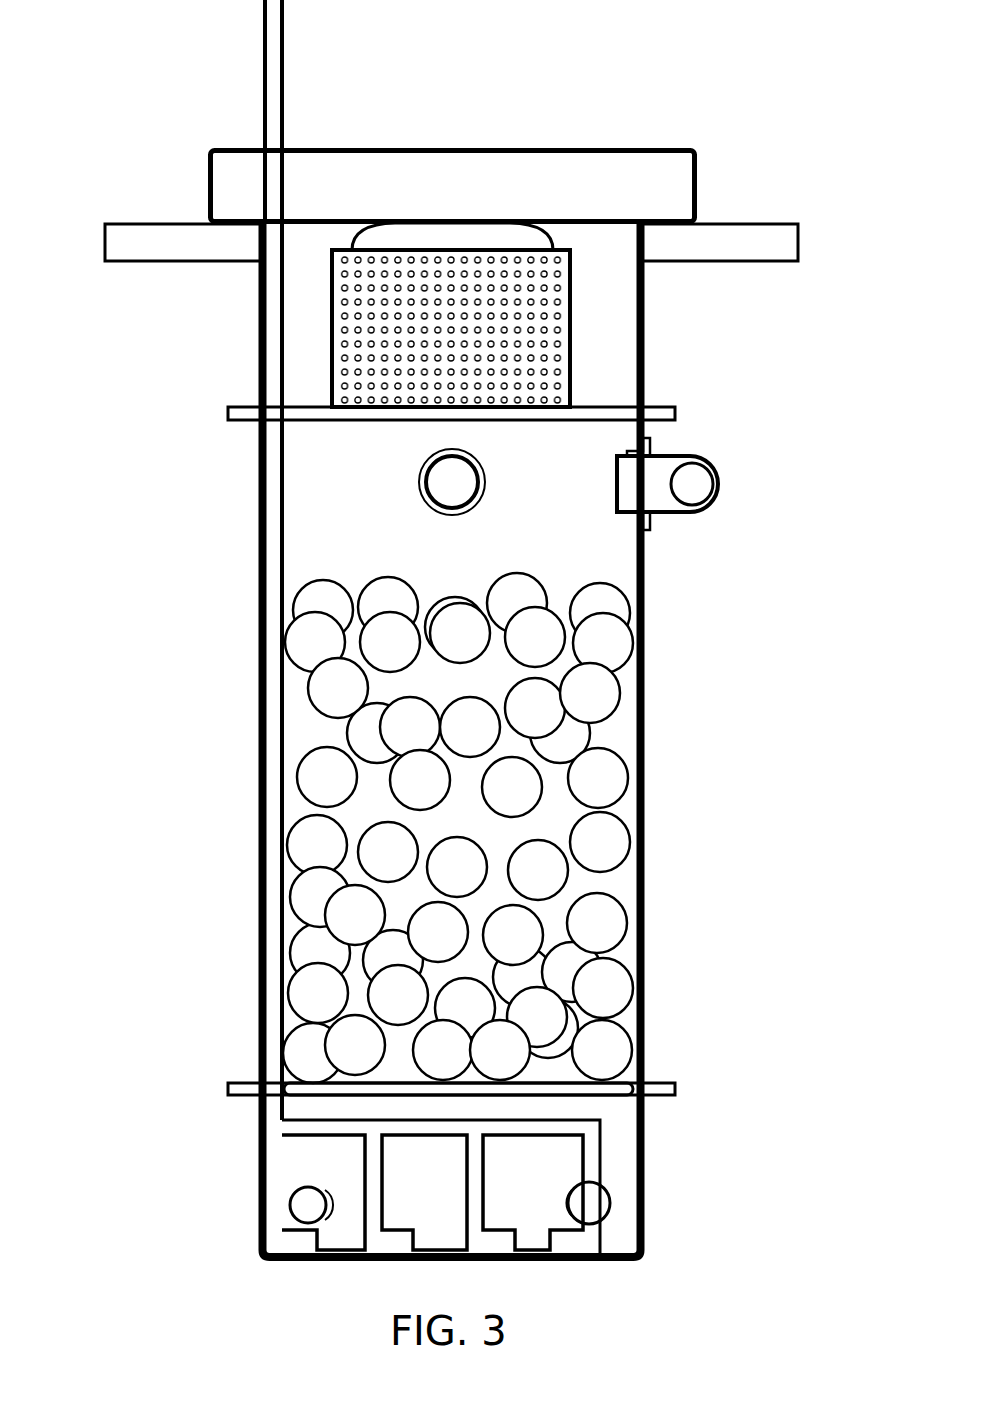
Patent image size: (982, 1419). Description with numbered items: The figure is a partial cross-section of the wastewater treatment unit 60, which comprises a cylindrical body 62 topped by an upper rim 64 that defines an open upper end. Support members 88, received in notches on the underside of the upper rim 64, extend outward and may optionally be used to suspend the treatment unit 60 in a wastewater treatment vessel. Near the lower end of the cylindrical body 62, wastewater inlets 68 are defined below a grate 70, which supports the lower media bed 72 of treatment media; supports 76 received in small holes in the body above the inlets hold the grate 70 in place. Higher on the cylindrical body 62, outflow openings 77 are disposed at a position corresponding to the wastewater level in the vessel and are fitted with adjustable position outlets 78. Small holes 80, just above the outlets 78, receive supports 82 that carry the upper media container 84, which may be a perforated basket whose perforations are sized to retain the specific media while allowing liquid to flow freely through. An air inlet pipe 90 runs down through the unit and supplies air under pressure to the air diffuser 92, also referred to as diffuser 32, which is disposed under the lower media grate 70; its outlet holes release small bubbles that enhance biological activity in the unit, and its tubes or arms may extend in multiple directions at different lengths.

The air diffuser 32 is at (415, 739).
The wastewater treatment unit 60 is at (460, 739).
The cylindrical body 62 is at (258, 692).
The upper rim 64 is at (698, 165).
The wastewater inlets 68 is at (288, 1198).
The grate 70 is at (610, 1097).
The lower media bed 72 is at (625, 908).
The supports 76 is at (677, 1092).
The outflow openings 77 is at (633, 515).
The adjustable position outlets 78 is at (718, 484).
The small holes 80 is at (518, 397).
The supports 82 is at (677, 410).
The upper media container 84 is at (574, 325).
The support members 88 is at (160, 262).
The air inlet pipe 90 is at (262, 52).
The air diffuser 92 is at (500, 1243).